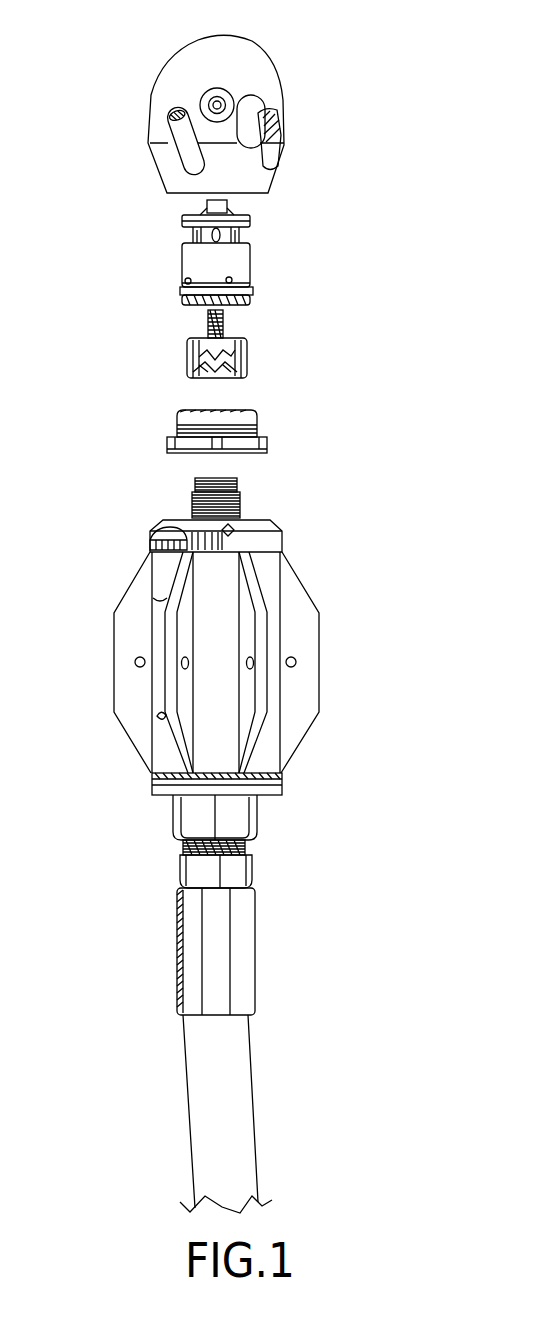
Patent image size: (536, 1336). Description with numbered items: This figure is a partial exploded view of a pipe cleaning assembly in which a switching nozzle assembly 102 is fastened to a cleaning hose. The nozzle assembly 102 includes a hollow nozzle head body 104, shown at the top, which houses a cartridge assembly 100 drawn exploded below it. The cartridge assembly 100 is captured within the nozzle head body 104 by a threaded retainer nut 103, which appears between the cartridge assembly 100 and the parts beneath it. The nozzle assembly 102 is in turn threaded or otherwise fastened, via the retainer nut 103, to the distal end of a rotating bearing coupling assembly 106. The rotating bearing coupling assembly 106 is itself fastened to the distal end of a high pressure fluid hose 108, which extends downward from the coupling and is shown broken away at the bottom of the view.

The cartridge assembly 100 is at (154, 208).
The nozzle assembly 102 is at (322, 65).
The threaded retainer nut 103 is at (176, 448).
The hollow nozzle head body 104 is at (280, 65).
The rotating bearing coupling assembly 106 is at (300, 590).
The high pressure fluid hose 108 is at (250, 1105).